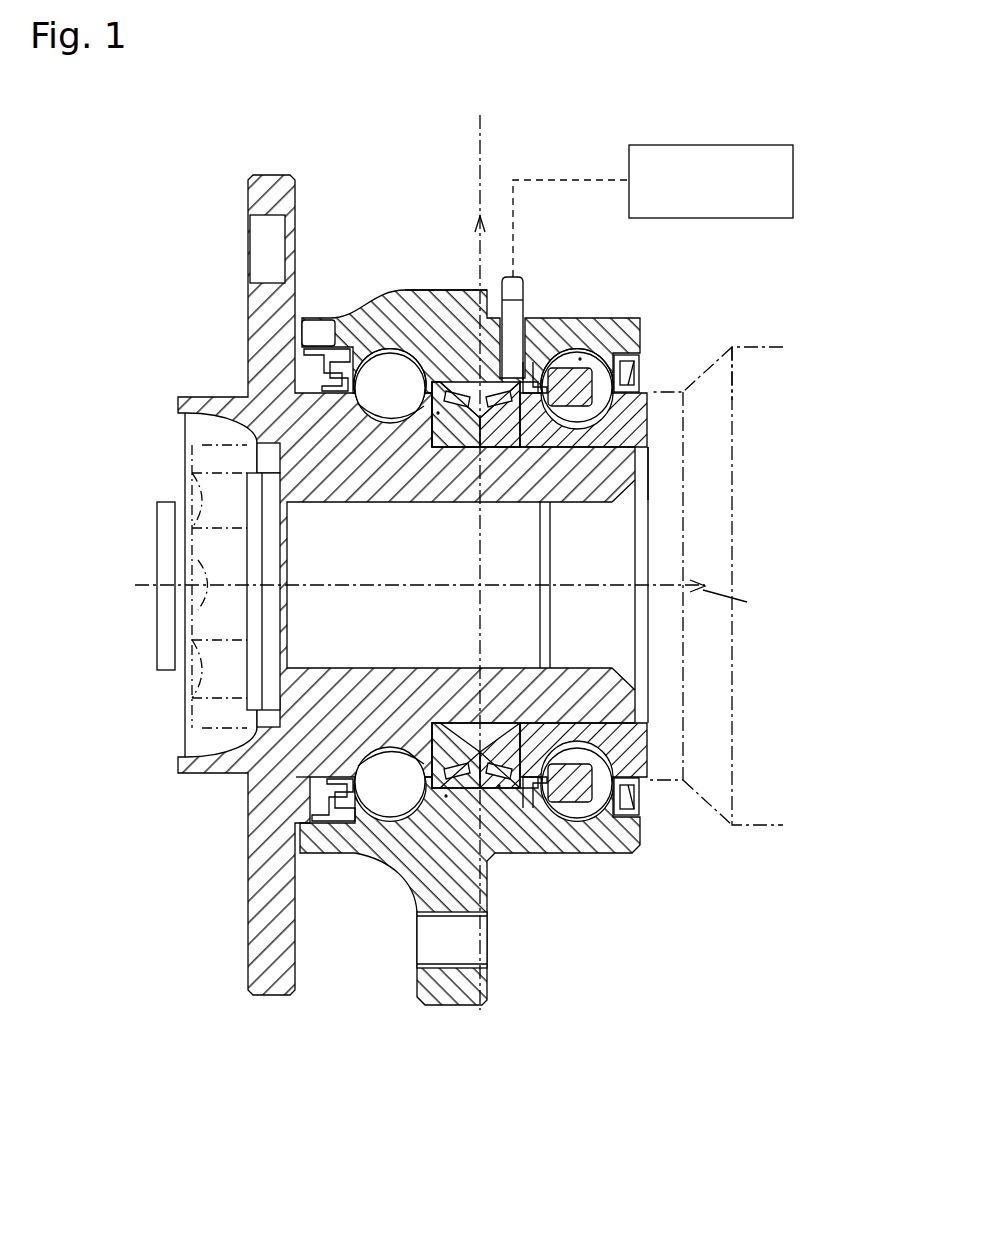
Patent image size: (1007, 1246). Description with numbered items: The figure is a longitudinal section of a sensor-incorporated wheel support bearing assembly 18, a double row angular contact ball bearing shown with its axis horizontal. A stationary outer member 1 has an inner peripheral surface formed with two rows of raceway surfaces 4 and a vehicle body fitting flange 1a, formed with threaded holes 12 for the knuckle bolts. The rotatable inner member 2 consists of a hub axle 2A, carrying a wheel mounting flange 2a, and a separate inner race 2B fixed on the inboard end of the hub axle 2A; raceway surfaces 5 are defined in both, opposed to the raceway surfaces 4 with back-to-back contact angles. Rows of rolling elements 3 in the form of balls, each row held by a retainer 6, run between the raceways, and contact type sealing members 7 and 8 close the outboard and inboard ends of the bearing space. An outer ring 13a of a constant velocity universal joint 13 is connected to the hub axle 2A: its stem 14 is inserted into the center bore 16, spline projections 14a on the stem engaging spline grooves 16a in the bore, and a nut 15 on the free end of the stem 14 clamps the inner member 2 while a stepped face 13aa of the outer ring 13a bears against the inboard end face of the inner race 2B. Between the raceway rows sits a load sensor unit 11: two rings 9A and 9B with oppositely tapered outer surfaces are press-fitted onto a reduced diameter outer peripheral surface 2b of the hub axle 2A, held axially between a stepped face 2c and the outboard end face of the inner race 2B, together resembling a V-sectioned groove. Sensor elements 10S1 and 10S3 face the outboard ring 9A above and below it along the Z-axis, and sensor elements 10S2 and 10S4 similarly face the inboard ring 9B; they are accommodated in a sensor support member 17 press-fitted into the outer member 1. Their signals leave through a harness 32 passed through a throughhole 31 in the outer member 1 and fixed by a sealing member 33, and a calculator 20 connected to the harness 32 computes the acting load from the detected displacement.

The outer member 1 is at (477, 292).
The vehicle body fitting flange 1a is at (445, 1006).
The inner member 2 is at (44, 552).
The hub axle 2A is at (317, 473).
The inner race 2B is at (633, 447).
The wheel mounting flange 2a is at (247, 190).
The reduced diameter outer peripheral surface 2b is at (536, 450).
The stepped face 2c is at (418, 452).
The rolling elements 3 is at (388, 378).
The raceway surfaces 4 is at (385, 346).
The raceway surfaces 5 is at (365, 410).
The retainer 6 is at (343, 828).
The sealing member 7 is at (317, 360).
The sealing member 8 is at (640, 370).
The ring 9A is at (462, 420).
The ring 9B is at (496, 420).
The sensor element 10S1 is at (438, 412).
The sensor element 10S2 is at (580, 358).
The sensor element 10S3 is at (445, 797).
The sensor element 10S4 is at (500, 787).
The load sensor unit 11 is at (425, 452).
The threaded holes 12 is at (450, 963).
The constant velocity universal joint 13 is at (793, 340).
The outer ring 13a is at (732, 347).
The stepped face 13aa is at (627, 445).
The stem 14 is at (177, 678).
The nut 15 is at (183, 708).
The center bore 16 is at (300, 620).
The spline projections 14a is at (247, 787).
The spline grooves 16a is at (300, 778).
The sensor support member 17 is at (462, 305).
The wheel support bearing assembly 18 is at (195, 268).
The calculator 20 is at (732, 145).
The throughhole 31 is at (516, 300).
The harness 32 is at (522, 300).
The sealing member 33 is at (492, 292).